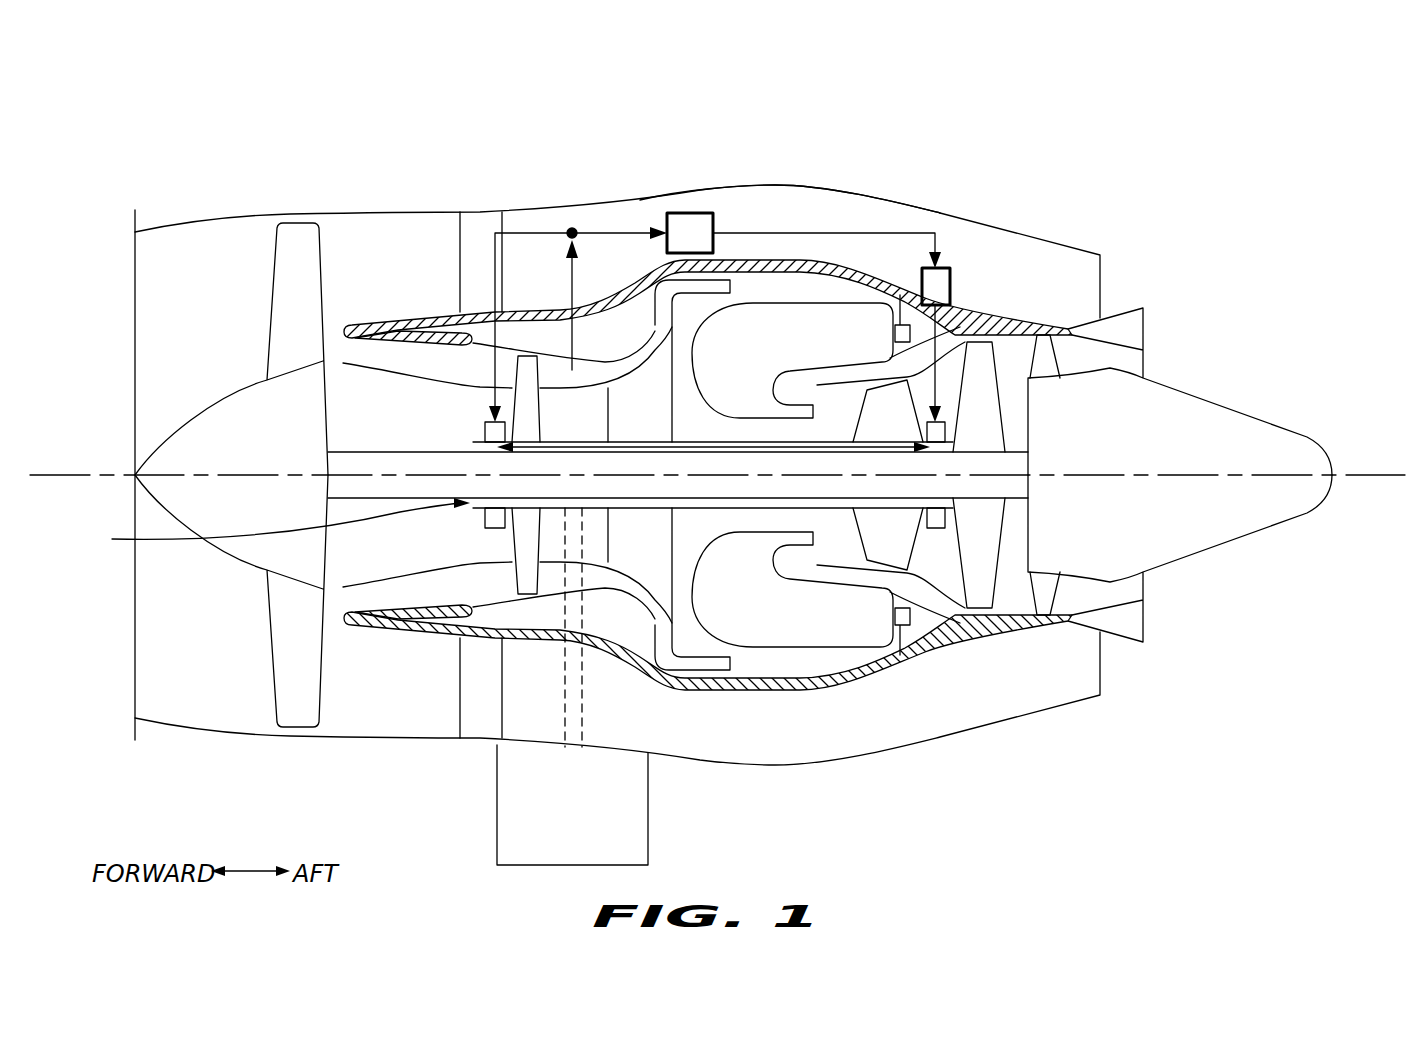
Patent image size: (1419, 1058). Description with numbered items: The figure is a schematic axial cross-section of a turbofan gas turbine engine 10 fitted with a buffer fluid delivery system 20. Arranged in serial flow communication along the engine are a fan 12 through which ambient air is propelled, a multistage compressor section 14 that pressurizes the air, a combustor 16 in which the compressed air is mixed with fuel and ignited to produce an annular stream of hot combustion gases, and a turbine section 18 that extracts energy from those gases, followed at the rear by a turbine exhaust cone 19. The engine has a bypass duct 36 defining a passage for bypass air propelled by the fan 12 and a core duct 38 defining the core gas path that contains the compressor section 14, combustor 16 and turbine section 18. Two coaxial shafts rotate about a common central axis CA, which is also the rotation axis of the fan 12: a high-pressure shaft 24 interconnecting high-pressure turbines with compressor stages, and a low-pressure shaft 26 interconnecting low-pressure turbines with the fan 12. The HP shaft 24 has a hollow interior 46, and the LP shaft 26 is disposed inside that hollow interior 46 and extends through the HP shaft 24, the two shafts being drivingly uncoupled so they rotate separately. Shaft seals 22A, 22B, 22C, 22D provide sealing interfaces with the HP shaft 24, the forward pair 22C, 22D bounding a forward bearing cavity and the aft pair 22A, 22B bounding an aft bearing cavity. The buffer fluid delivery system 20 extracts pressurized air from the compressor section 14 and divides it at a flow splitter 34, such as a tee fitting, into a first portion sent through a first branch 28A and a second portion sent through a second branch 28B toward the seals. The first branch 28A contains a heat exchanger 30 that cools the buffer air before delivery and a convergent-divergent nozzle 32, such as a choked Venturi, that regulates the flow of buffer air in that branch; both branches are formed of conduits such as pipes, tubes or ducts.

The gas turbine engine 10 is at (930, 135).
The fan 12 is at (297, 634).
The compressor section 14 is at (592, 377).
The combustor 16 is at (777, 332).
The turbine section 18 is at (935, 545).
The turbine exhaust cone 19 is at (1210, 437).
The buffer fluid delivery system 20 is at (815, 205).
The shaft seal 22A is at (950, 431).
The shaft seal 22B is at (936, 518).
The shaft seal 22C is at (484, 433).
The shaft seal 22D is at (495, 518).
The high-pressure shaft 24 is at (553, 500).
The low-pressure shaft 26 is at (690, 500).
The first branch 28A is at (630, 232).
The second branch 28B is at (525, 232).
The heat exchanger 30 is at (693, 212).
The convergent-divergent nozzle 32 is at (950, 277).
The flow splitter 34 is at (573, 223).
The bypass duct 36 is at (428, 247).
The core duct 38 is at (400, 587).
The hollow interior 46 is at (274, 524).
The central axis CA is at (1375, 475).